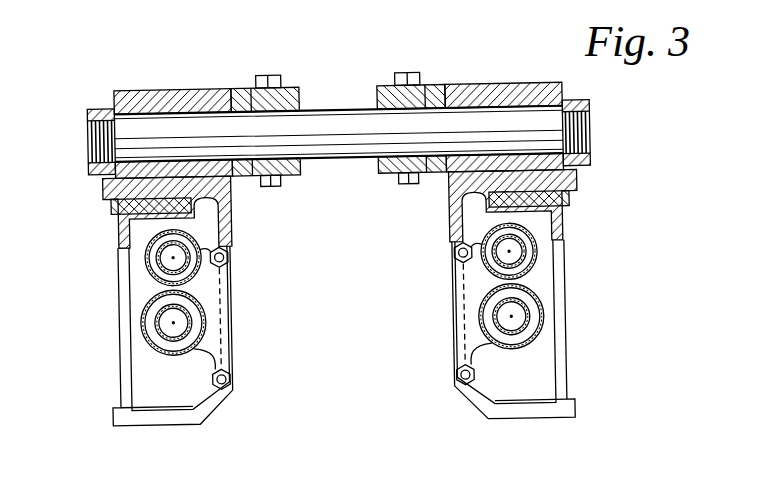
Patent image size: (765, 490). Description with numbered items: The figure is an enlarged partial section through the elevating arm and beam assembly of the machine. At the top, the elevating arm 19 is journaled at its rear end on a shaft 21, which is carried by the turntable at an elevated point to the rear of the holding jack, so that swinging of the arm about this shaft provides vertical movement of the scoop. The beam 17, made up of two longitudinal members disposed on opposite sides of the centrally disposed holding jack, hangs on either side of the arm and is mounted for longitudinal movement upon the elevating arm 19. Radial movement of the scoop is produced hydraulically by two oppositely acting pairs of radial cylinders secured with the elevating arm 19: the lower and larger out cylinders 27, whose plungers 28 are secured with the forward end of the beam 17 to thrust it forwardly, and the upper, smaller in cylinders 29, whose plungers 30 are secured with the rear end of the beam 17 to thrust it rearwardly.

The beam 17 is at (118, 352).
The elevating arm 19 is at (157, 87).
The shaft 21 is at (356, 99).
The out cylinders 27 is at (488, 341).
The plungers 28 is at (496, 316).
The in cylinders 29 is at (481, 246).
The plungers 30 is at (186, 267).